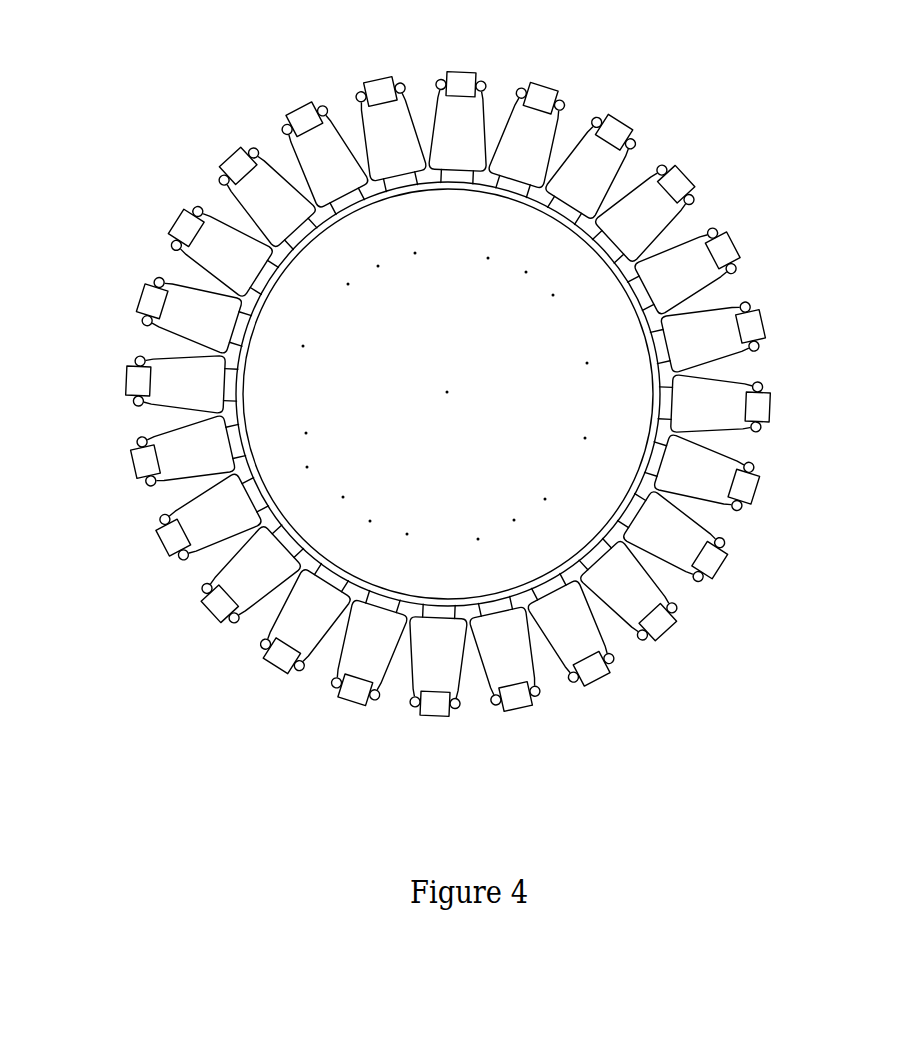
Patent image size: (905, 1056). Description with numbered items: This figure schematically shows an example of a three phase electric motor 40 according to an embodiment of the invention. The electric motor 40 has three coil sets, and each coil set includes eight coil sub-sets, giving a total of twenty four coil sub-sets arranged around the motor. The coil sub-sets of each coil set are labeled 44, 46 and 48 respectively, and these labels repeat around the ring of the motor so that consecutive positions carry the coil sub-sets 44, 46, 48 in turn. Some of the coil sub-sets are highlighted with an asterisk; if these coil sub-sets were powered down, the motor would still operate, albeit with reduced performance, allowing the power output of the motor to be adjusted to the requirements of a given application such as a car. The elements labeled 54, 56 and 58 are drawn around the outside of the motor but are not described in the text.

The electric motor 40 is at (702, 57).
The coil sub-set 44 is at (448, 394).
The coil sub-set 46 is at (448, 394).
The coil sub-set 48 is at (448, 394).
The tooth arm 54 is at (447, 394).
The tooth arm 56 is at (447, 383).
The tooth arm 58 is at (448, 394).